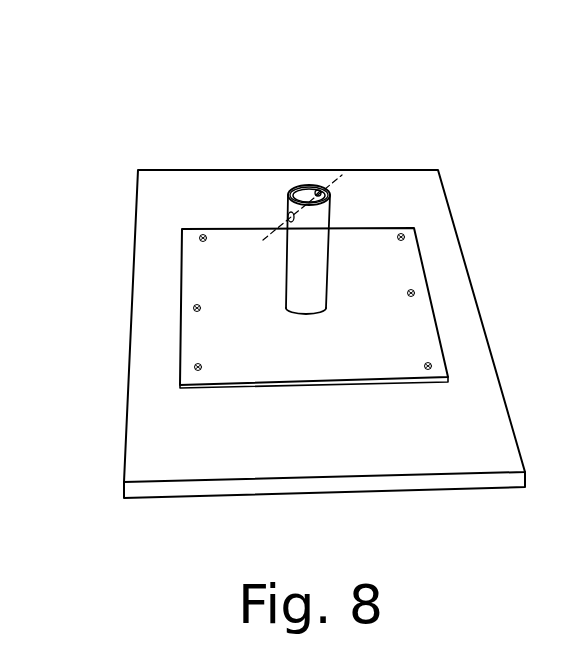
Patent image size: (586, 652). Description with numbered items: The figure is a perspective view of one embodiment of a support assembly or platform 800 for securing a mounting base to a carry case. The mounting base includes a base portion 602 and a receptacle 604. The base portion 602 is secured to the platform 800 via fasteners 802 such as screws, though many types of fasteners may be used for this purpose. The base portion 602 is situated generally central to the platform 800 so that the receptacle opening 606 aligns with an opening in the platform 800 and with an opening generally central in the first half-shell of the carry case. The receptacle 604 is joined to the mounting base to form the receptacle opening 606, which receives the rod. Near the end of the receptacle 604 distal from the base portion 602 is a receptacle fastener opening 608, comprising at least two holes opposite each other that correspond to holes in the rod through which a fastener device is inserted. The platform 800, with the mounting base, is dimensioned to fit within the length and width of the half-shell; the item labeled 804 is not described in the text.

The platform 800 is at (186, 70).
The fasteners 802 is at (131, 307).
The base portion 602 is at (370, 228).
The receptacle 604 is at (287, 272).
The receptacle opening 606 is at (304, 202).
The receptacle fastener opening 608 is at (290, 215).
The fasteners 804 is at (416, 293).